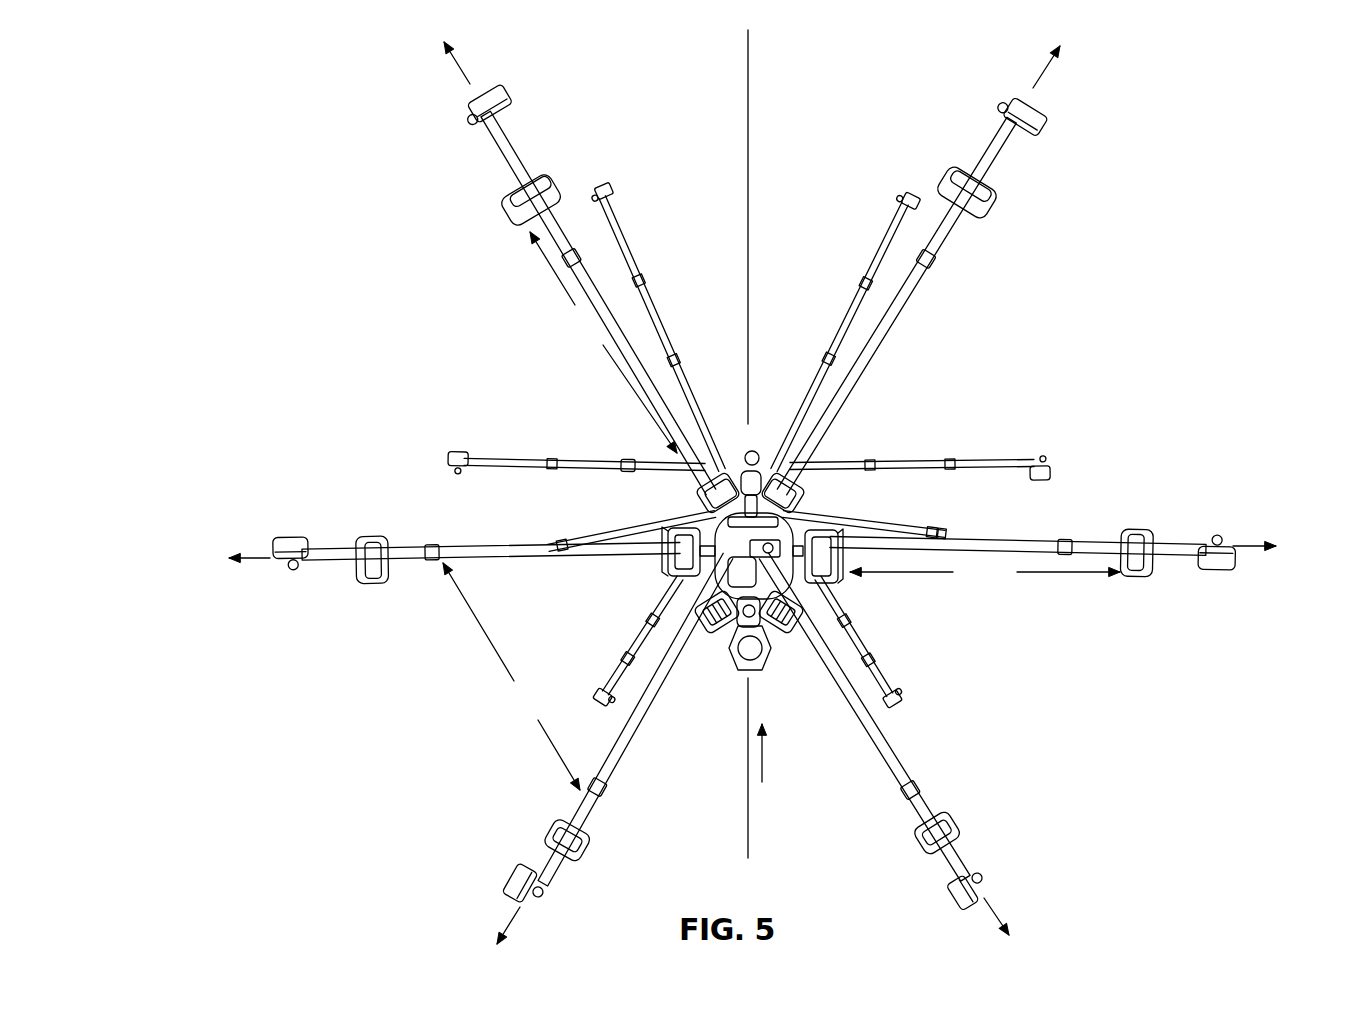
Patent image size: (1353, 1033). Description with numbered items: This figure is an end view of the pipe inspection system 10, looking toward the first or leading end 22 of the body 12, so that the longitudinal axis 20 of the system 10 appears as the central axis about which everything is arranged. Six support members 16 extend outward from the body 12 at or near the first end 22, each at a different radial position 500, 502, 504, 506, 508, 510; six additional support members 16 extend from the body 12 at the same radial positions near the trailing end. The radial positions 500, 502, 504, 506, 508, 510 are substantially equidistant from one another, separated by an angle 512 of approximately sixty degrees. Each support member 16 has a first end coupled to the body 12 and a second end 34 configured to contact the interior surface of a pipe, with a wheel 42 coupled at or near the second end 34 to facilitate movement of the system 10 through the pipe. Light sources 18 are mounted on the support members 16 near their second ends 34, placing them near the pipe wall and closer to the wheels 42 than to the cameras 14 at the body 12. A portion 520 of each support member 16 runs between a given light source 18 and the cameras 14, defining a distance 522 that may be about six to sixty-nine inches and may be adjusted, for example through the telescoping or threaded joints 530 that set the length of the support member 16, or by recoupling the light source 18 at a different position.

The system 10 is at (286, 781).
The body 12 is at (685, 495).
The cameras 14 is at (672, 560).
The support member 16 is at (622, 223).
The light source 18 is at (990, 196).
The longitudinal axis 20 is at (748, 816).
The first end 22 is at (771, 764).
The second end 34 is at (506, 79).
The wheel 42 is at (510, 103).
The radial position 500 is at (485, 925).
The radial position 502 is at (1022, 916).
The radial position 504 is at (1274, 532).
The radial position 506 is at (1062, 68).
The radial position 508 is at (440, 64).
The radial position 510 is at (233, 543).
The angle 512 is at (511, 676).
The portion 520 is at (502, 562).
The distance 522 is at (825, 408).
The joint 530 is at (843, 287).